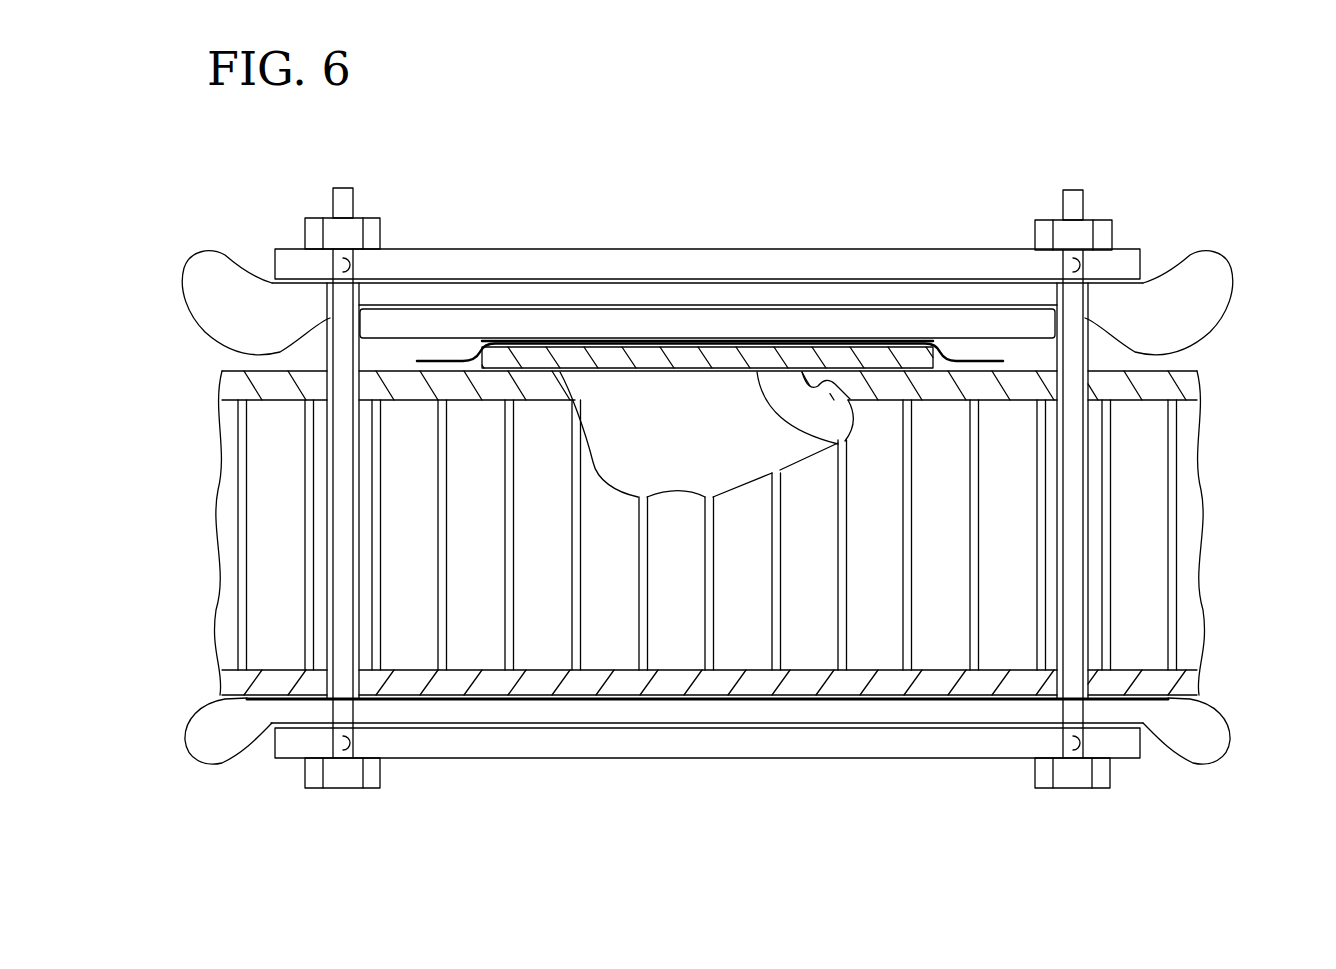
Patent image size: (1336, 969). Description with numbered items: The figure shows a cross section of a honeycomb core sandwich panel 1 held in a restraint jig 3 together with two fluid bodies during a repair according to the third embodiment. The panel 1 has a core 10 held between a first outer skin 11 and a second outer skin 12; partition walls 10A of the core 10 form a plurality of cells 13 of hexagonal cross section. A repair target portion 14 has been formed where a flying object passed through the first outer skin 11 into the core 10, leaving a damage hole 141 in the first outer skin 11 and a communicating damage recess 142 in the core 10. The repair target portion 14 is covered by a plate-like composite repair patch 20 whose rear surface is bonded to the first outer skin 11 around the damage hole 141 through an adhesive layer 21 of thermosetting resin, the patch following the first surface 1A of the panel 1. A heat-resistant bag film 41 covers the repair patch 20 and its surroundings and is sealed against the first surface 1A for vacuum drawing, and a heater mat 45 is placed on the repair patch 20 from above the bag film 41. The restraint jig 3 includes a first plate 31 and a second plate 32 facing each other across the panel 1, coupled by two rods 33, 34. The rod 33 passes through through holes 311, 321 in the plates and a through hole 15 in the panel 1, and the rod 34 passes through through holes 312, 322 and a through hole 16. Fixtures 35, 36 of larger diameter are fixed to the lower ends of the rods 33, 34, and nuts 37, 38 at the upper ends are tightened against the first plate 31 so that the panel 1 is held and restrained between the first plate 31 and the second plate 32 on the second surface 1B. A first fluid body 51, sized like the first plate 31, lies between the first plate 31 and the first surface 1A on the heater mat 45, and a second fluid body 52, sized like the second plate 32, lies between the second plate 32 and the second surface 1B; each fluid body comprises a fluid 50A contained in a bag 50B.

The honeycomb core sandwich panel 1 is at (1250, 340).
The first surface 1A is at (1020, 371).
The second surface 1B is at (895, 702).
The restraint jig 3 is at (1137, 197).
The core 10 is at (1205, 478).
The partition walls 10A is at (455, 657).
The first outer skin 11 is at (1196, 372).
The second outer skin 12 is at (920, 690).
The cells 13 is at (538, 657).
The repair target portion 14 is at (843, 188).
The damage hole 141 is at (802, 371).
The damage recess 142 is at (758, 371).
The through hole 15 is at (337, 558).
The through hole 16 is at (1073, 558).
The repair patch 20 is at (602, 340).
The adhesive layer 21 is at (542, 356).
The first plate 31 is at (713, 249).
The through hole 311 is at (330, 266).
The through hole 312 is at (1080, 268).
The second plate 32 is at (695, 760).
The through hole 321 is at (343, 748).
The through hole 322 is at (1078, 748).
The rod 33 is at (343, 188).
The rod 34 is at (1073, 190).
The fixture 35 is at (350, 790).
The fixture 36 is at (1065, 790).
The nut 37 is at (303, 233).
The nut 38 is at (1035, 235).
The bag film 41 is at (660, 336).
The heater mat 45 is at (902, 308).
The fluid 50A is at (1222, 280).
The bag 50B is at (1197, 251).
The first fluid body 51 is at (857, 290).
The second fluid body 52 is at (768, 712).